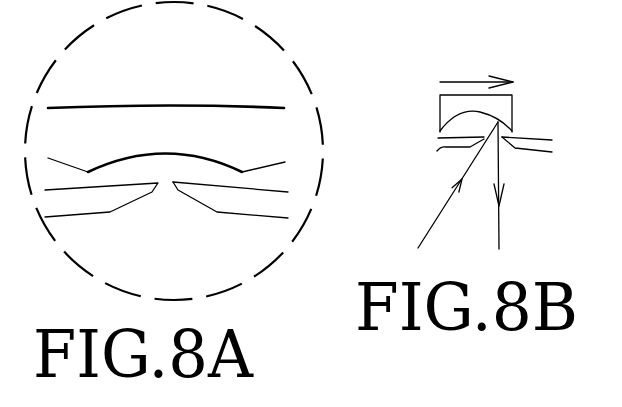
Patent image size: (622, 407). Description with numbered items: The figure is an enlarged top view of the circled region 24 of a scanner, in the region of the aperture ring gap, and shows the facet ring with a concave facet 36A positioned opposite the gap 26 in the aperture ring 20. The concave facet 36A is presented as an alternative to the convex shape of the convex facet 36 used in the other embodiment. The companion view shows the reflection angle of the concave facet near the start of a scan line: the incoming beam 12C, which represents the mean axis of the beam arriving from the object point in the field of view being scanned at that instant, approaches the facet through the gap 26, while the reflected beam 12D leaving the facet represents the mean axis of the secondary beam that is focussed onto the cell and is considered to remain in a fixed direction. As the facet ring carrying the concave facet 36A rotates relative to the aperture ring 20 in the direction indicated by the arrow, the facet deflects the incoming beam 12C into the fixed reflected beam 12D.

In FIG. 8A, the aperture ring 20 is at (122, 195).
In FIG. 8B, the aperture ring 20 is at (438, 150).
In FIG. 8A, the circled region 24 is at (257, 27).
In FIG. 8A, the gap 26 is at (167, 196).
In FIG. 8A, the convex facet 36 is at (203, 158).
In FIG. 8B, the concave facet 36A is at (468, 113).
In FIG. 8B, the incoming beam 12C is at (433, 225).
In FIG. 8B, the reflected beam 12D is at (499, 228).